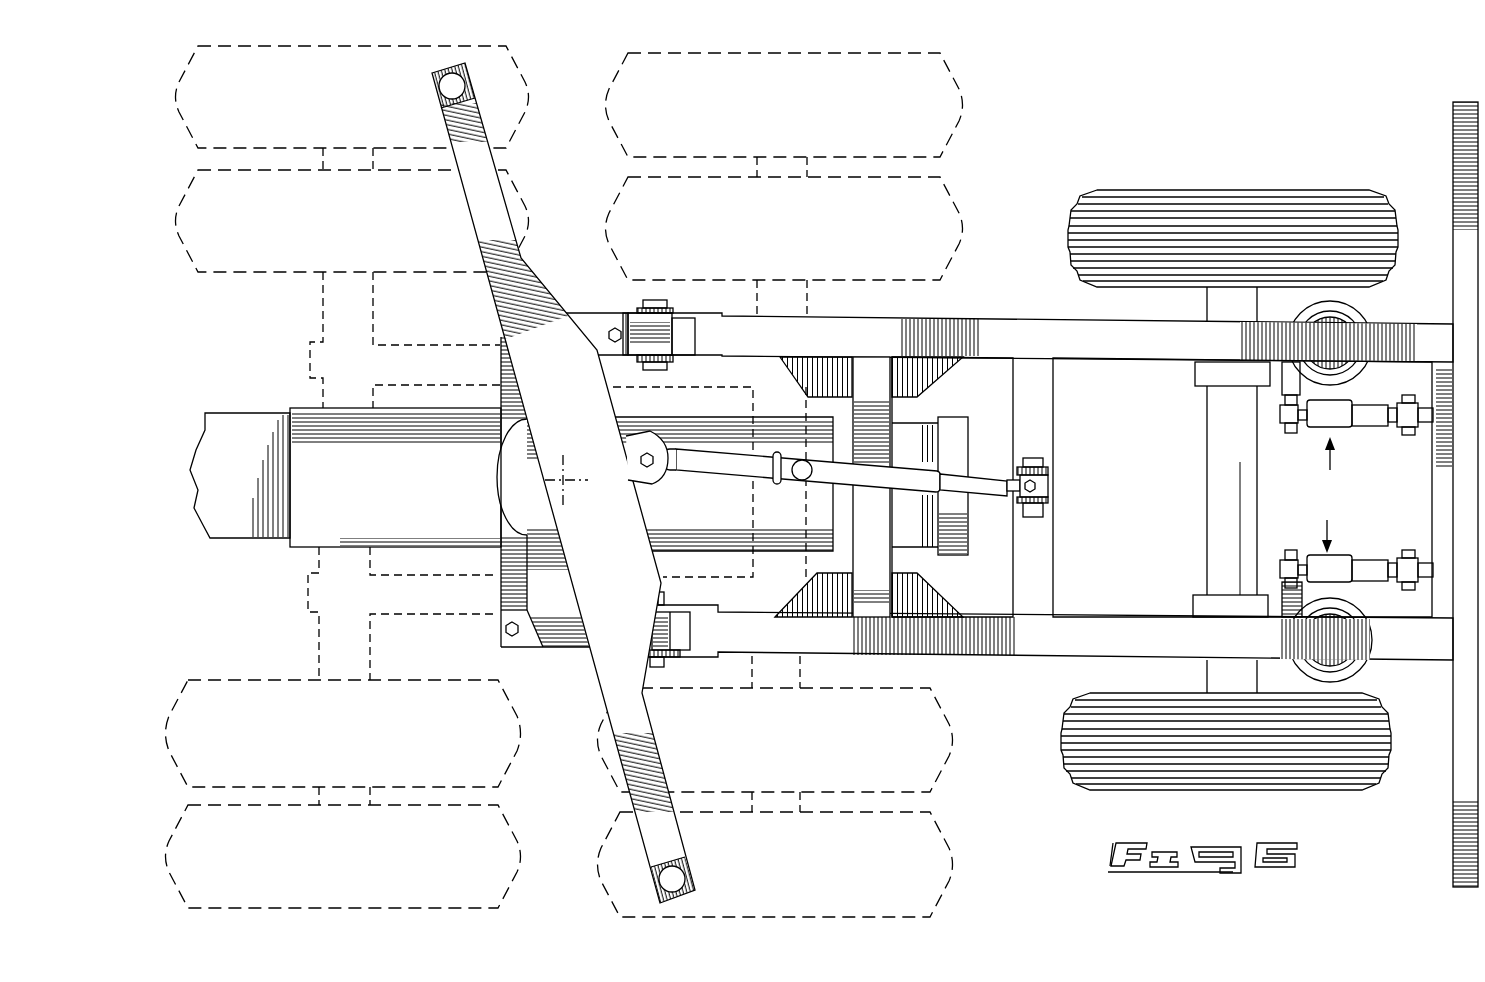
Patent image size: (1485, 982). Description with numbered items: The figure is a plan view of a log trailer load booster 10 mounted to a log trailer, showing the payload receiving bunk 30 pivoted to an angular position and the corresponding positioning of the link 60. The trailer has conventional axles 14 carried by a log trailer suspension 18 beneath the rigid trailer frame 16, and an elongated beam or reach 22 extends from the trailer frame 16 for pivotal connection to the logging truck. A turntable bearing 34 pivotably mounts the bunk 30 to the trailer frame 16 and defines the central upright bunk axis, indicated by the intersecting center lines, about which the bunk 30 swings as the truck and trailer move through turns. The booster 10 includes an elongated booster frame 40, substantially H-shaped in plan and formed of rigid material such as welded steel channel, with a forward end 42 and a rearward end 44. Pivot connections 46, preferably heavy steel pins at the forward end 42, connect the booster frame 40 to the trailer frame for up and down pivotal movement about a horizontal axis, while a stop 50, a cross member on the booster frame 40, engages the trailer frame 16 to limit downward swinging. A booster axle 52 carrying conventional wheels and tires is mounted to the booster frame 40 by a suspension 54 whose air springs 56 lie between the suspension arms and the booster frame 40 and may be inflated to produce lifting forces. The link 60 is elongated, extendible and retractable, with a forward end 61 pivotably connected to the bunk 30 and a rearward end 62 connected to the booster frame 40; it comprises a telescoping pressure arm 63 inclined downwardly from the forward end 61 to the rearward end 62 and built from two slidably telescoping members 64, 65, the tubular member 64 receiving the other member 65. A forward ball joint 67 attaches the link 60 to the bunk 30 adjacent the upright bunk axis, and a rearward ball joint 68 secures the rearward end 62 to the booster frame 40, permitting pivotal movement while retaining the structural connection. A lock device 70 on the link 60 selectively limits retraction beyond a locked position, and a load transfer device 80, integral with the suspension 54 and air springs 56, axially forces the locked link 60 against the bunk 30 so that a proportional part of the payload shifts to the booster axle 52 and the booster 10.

The log trailer load booster 10 is at (1170, 127).
The trailer axles 14 is at (345, 312).
The trailer frame 16 is at (357, 509).
The log trailer suspension 18 is at (443, 366).
The reach 22 is at (236, 455).
The bunk 30 is at (573, 527).
The turntable bearing 34 is at (505, 487).
The booster frame 40 is at (1057, 650).
The forward end 42 is at (716, 313).
The rearward end 44 is at (1453, 527).
The pivot connections 46 is at (653, 300).
The stop 50 is at (876, 398).
The booster axle 52 is at (1220, 517).
The suspension 54 is at (1316, 495).
The air springs 56 is at (1363, 313).
The link 60 is at (728, 488).
The forward end 61 is at (690, 449).
The rearward end 62 is at (1000, 494).
The telescoping pressure arm 63 is at (778, 450).
The tubular telescoping member 64 is at (880, 487).
The telescoping member 65 is at (957, 472).
The forward ball joint 67 is at (632, 452).
The rearward ball joint 68 is at (1050, 481).
The lock device 70 is at (805, 488).
The load transfer device 80 is at (1366, 388).